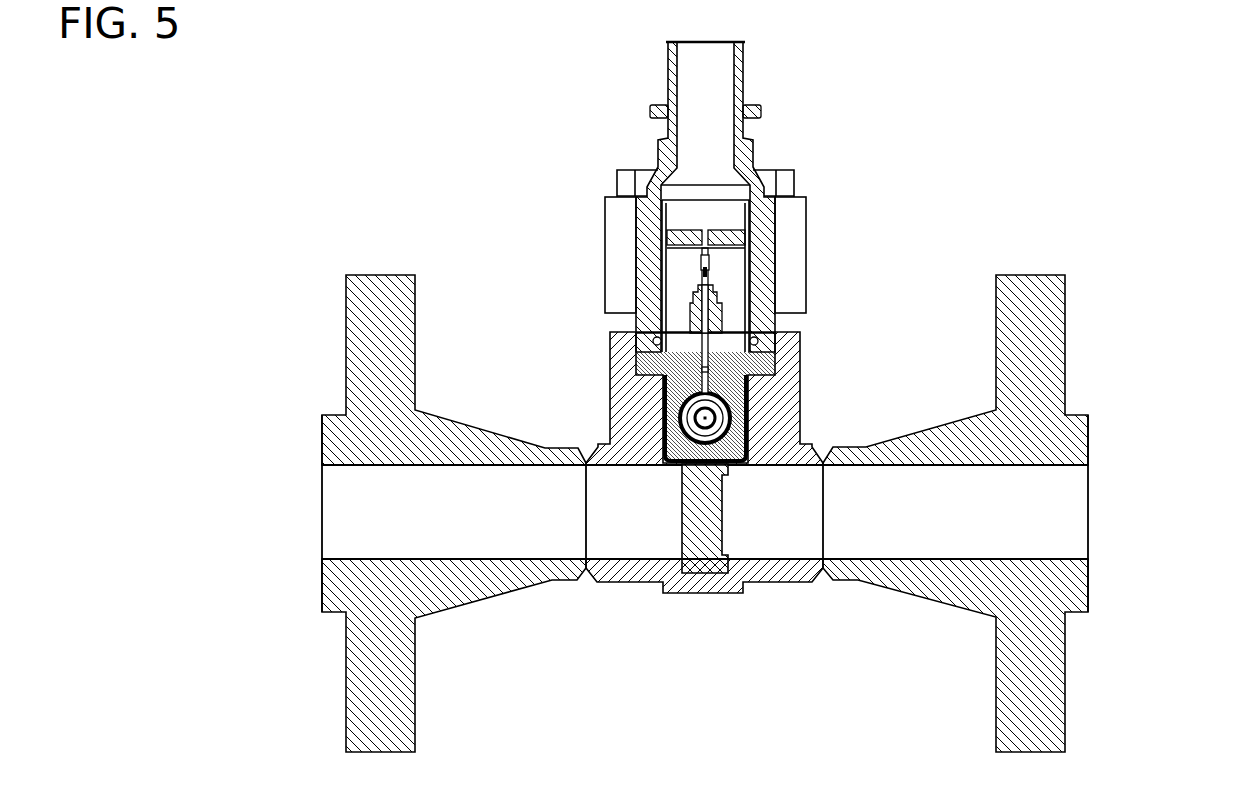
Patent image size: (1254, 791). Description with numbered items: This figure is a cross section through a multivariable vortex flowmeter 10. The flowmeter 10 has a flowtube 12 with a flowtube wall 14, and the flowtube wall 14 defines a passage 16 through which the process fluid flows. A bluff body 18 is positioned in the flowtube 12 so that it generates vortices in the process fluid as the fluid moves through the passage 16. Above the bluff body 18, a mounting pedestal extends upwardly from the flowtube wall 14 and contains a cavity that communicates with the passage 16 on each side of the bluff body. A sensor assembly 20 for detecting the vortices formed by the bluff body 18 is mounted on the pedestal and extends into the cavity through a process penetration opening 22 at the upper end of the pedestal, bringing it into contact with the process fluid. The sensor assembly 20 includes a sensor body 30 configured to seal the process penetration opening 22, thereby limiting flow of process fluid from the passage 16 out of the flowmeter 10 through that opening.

The multivariable vortex flowmeter 10 is at (1140, 142).
The flowtube 12 is at (926, 427).
The flowtube wall 14 is at (900, 558).
The passage 16 is at (893, 504).
The bluff body 18 is at (722, 535).
The sensor assembly 20 is at (641, 360).
The process penetration opening 22 is at (772, 372).
The sensor body 30 is at (764, 358).